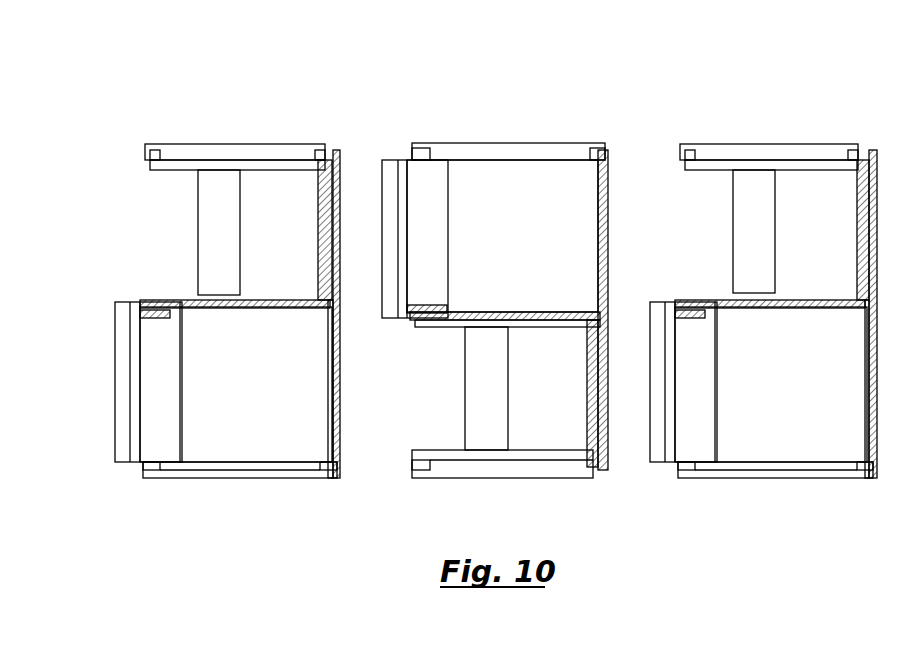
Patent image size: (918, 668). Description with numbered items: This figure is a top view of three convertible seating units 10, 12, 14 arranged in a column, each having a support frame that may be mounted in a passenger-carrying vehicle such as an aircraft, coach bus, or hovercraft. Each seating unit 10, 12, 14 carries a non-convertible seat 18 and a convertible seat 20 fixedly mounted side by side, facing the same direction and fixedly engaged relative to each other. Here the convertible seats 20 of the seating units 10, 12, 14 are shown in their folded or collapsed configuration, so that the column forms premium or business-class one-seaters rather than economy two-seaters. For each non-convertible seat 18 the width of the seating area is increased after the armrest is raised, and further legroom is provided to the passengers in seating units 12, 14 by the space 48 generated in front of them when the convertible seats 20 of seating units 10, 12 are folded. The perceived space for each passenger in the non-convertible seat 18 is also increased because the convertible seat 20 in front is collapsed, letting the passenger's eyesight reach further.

The convertible seating unit 10 is at (742, 126).
The seating unit 12 is at (450, 126).
The seating unit 14 is at (198, 124).
The non-convertible seat 18 is at (520, 195).
The convertible seat 20 is at (277, 195).
The space 48 is at (167, 218).